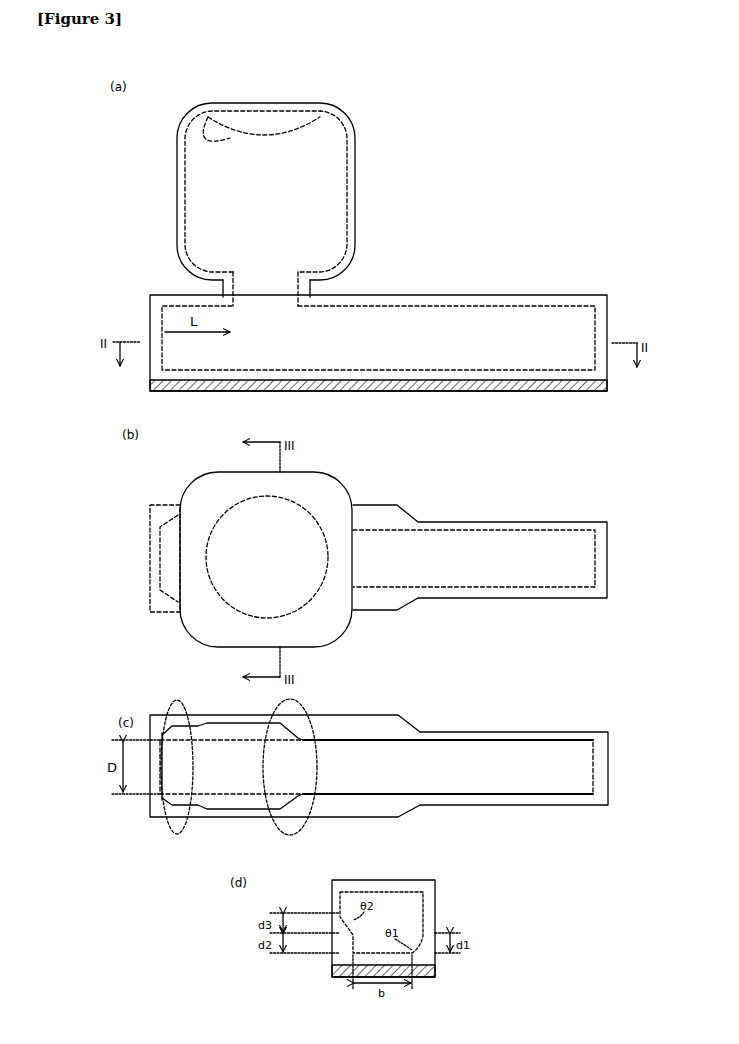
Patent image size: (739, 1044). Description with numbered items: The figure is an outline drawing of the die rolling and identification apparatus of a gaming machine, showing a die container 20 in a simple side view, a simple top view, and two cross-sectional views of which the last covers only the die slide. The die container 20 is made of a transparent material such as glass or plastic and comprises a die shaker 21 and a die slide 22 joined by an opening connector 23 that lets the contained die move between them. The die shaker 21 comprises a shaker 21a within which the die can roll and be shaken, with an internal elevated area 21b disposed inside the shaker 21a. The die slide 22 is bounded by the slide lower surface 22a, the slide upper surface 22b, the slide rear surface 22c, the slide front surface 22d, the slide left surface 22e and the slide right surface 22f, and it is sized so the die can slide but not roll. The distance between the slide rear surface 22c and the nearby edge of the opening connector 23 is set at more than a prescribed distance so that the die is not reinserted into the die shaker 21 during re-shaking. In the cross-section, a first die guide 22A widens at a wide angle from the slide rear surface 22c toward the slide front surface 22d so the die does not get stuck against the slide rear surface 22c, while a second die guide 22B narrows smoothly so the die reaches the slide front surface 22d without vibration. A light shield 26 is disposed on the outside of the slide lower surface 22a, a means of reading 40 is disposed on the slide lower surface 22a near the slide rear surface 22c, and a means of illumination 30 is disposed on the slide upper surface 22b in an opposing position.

The die container 20 is at (405, 178).
The die shaker 21 is at (356, 207).
The shaker 21a is at (352, 118).
The internal elevated area 21b is at (198, 128).
The die slide 22 is at (468, 297).
The slide lower surface 22a is at (370, 372).
The slide upper surface 22b is at (400, 297).
The slide rear surface 22c is at (158, 322).
The slide front surface 22d is at (600, 322).
The slide left surface 22e is at (478, 598).
The slide right surface 22f is at (487, 524).
The No. 1 die guide 22A is at (185, 830).
The No. 2 die guide 22B is at (308, 705).
The opening connector 23 is at (312, 290).
The light shield 26 is at (583, 392).
The means of illumination 30 is at (150, 296).
The means of reading 40 is at (150, 380).